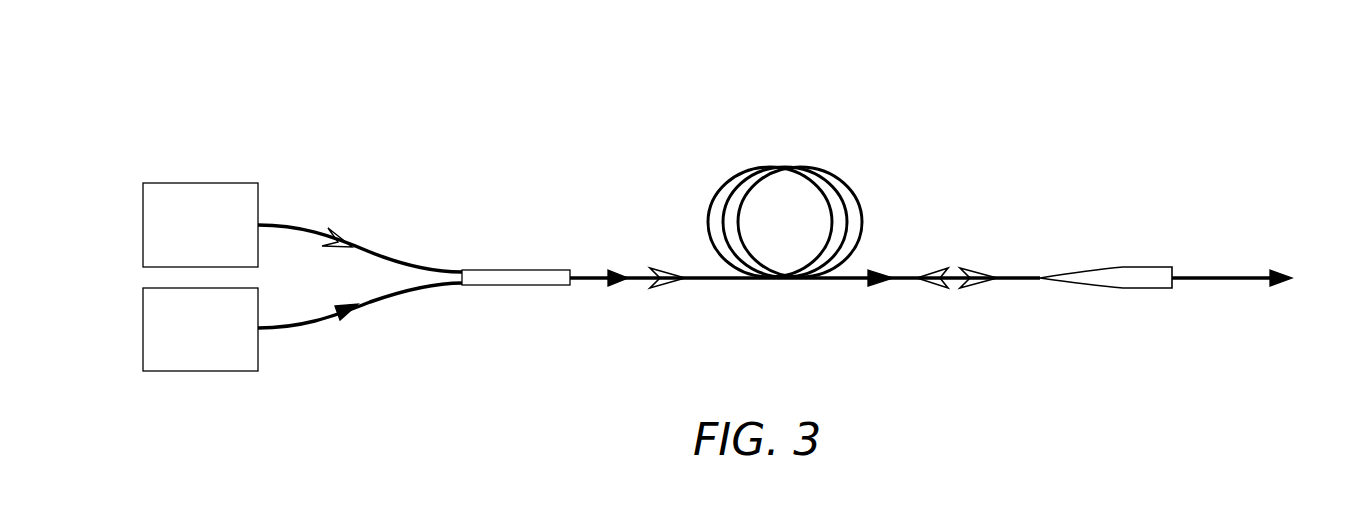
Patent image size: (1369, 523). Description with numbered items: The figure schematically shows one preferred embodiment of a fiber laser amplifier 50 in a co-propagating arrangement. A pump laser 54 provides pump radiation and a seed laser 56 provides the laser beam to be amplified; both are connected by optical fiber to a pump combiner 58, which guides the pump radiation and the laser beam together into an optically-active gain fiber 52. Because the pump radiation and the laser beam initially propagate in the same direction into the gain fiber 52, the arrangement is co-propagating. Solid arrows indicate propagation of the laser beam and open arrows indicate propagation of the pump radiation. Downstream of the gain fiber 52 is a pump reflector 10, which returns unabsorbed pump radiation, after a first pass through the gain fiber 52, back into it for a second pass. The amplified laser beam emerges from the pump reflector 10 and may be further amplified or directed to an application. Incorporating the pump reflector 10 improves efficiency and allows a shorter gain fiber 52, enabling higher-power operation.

The fiber laser amplifier 50 is at (450, 120).
The optically-active gain fiber 52 is at (763, 162).
The pump laser 54 is at (197, 183).
The seed laser 56 is at (258, 362).
The pump combiner 58 is at (498, 275).
The pump reflector 10 is at (1112, 255).